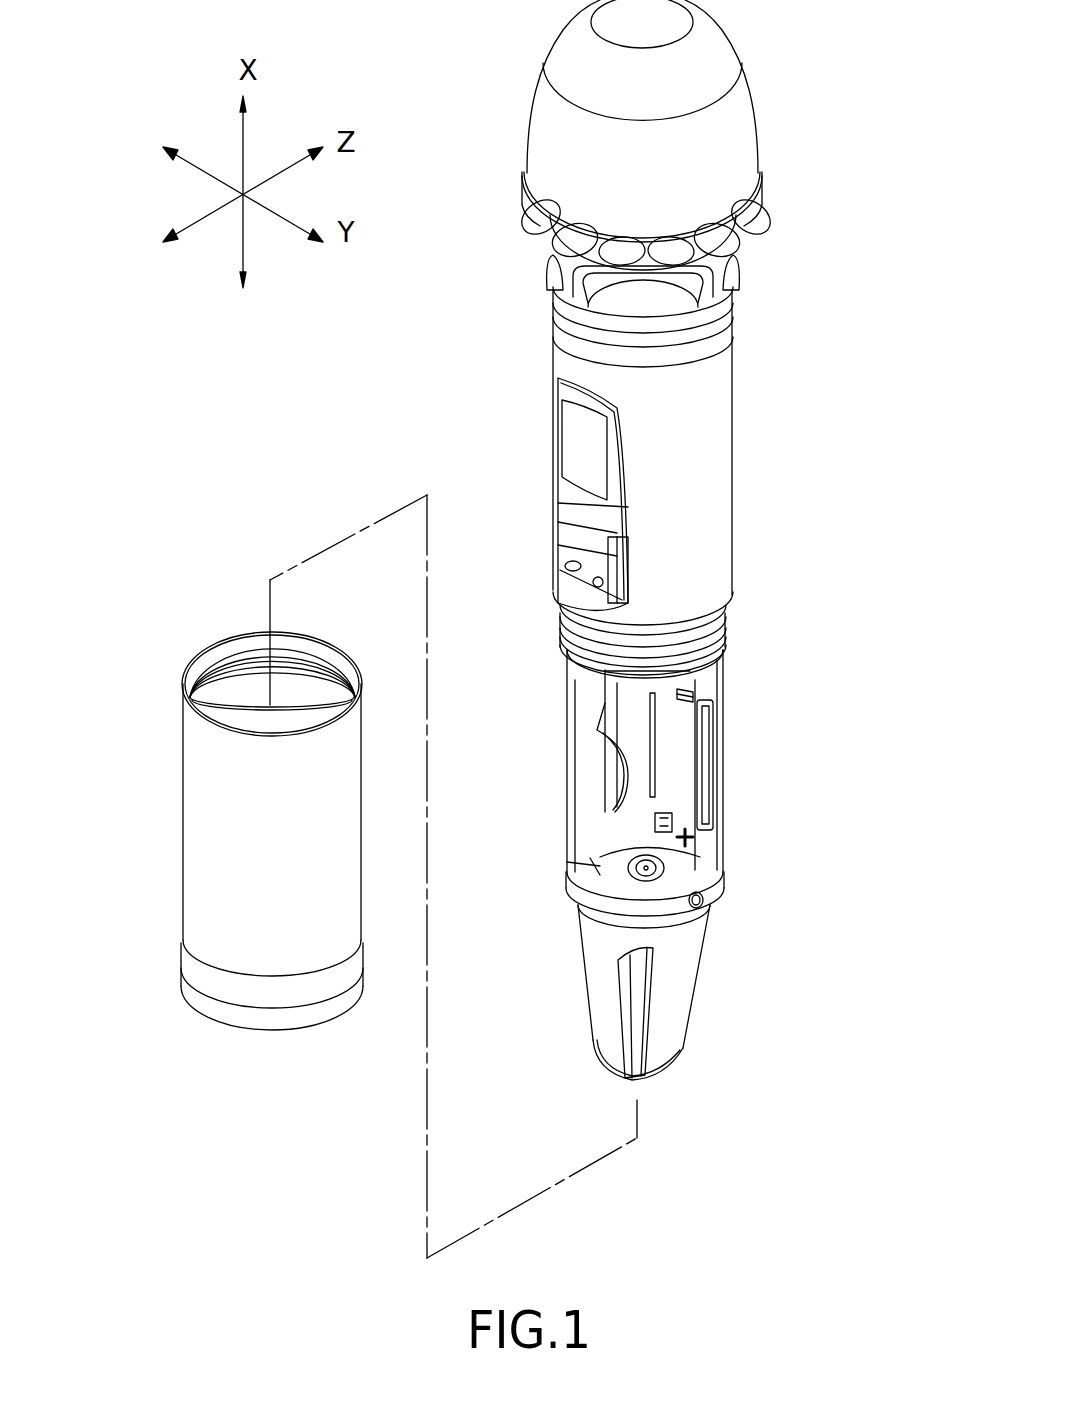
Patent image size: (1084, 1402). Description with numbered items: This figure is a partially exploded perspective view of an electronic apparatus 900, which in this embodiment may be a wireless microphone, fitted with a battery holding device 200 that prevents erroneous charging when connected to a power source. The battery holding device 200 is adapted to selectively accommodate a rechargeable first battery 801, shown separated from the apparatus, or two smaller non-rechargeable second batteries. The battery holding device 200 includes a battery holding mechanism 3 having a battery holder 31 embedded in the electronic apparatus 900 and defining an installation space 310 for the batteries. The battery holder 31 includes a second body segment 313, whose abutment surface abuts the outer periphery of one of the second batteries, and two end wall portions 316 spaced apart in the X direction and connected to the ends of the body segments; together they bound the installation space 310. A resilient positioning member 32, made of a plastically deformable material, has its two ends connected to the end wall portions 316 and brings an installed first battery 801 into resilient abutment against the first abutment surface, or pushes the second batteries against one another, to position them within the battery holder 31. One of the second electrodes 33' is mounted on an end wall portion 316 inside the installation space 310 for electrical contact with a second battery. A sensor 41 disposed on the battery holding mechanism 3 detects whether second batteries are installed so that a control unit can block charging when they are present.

The electronic apparatus 900 is at (705, 475).
The first battery 801 is at (577, 714).
The end wall portions 316 is at (653, 682).
The second body segment 313 is at (697, 773).
The resilient positioning member 32 is at (608, 793).
The battery holder 31 is at (563, 847).
The battery holding mechanism 3 is at (572, 872).
The installation space 310 is at (592, 860).
The battery holding device 200 is at (713, 893).
The sensor 41 is at (667, 832).
The second electrodes 33' is at (697, 936).